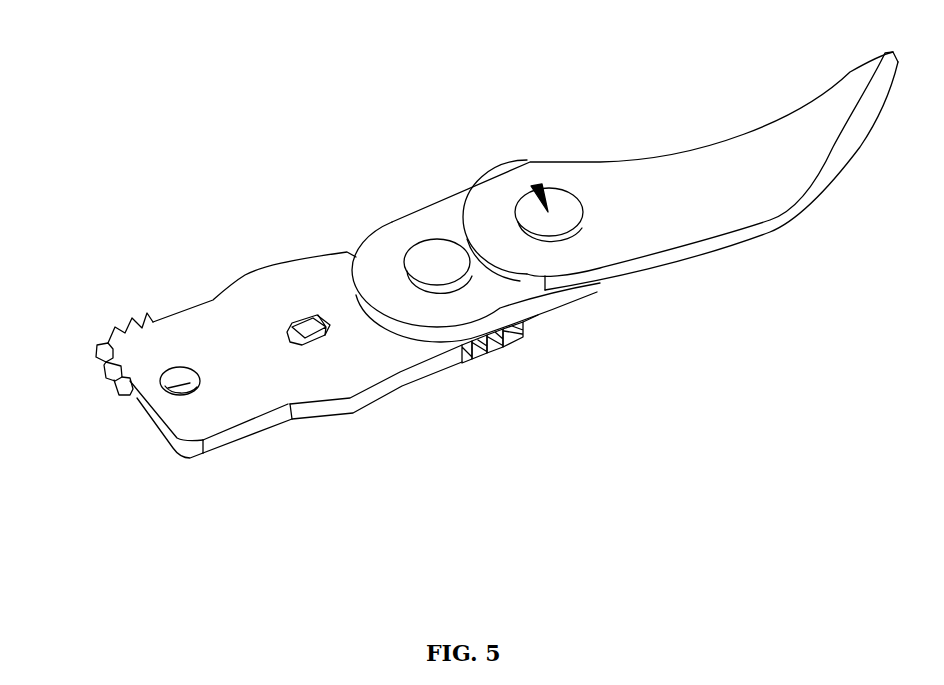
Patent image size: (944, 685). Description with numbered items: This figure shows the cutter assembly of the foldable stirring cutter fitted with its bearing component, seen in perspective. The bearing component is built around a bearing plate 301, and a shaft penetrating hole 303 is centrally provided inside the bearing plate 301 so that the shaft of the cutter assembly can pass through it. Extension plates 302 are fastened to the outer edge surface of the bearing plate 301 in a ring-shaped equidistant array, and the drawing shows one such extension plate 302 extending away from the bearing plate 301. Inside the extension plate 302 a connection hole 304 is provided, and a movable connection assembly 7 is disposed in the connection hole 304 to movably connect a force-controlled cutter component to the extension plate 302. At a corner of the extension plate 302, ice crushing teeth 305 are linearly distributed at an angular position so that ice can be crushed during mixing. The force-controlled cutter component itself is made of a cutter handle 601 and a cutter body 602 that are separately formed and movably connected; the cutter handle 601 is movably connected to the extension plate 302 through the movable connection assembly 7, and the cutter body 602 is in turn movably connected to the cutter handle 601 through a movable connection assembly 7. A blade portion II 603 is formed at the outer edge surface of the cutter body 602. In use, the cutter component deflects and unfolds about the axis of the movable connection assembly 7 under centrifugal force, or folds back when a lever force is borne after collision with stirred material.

The movable connection assembly 7 is at (535, 186).
The bearing plate 301 is at (343, 380).
The extension plate 302 is at (260, 402).
The shaft penetrating hole 303 is at (303, 322).
The connection hole 304 is at (163, 385).
The ice crushing teeth 305 is at (483, 352).
The cutter handle 601 is at (430, 220).
The cutter body 602 is at (683, 167).
The blade portion II 603 is at (740, 230).